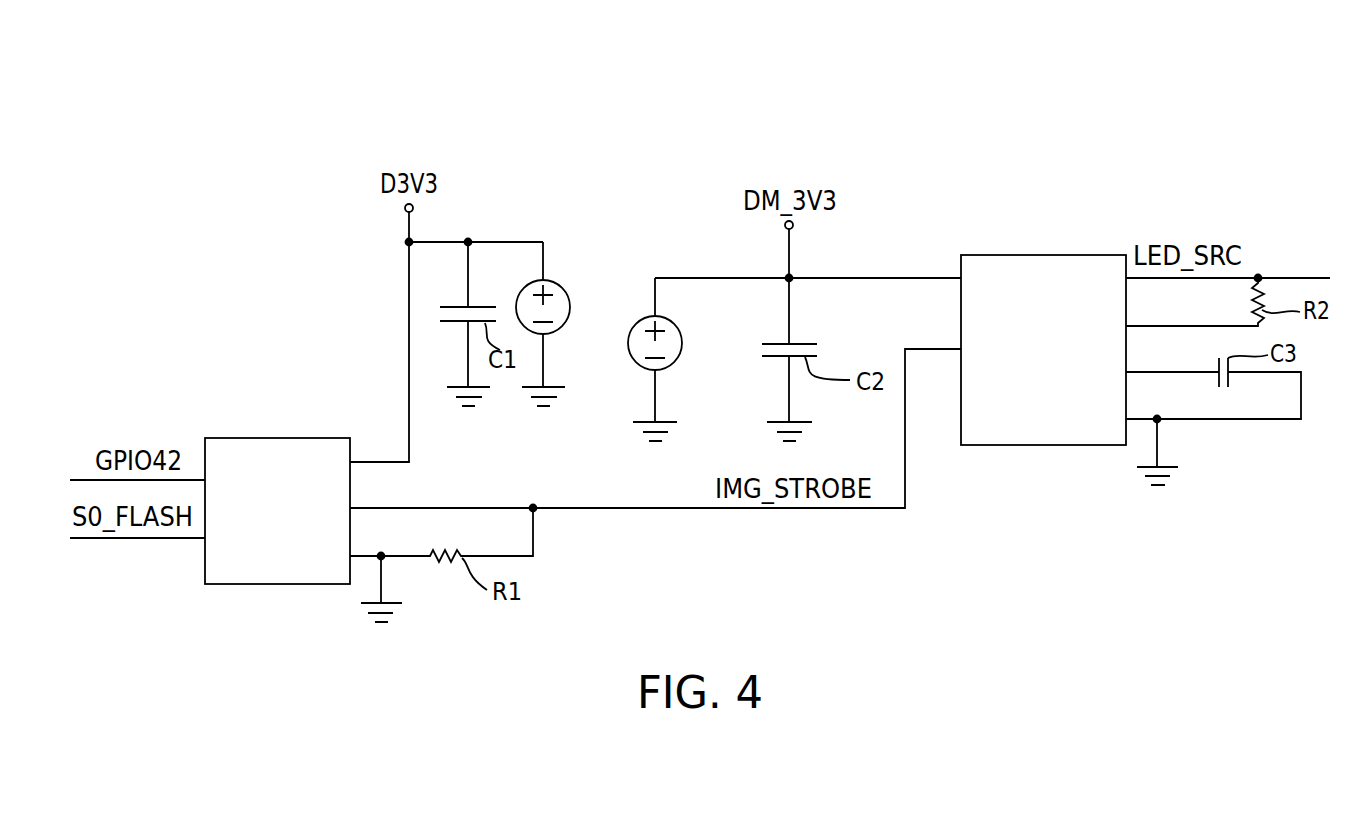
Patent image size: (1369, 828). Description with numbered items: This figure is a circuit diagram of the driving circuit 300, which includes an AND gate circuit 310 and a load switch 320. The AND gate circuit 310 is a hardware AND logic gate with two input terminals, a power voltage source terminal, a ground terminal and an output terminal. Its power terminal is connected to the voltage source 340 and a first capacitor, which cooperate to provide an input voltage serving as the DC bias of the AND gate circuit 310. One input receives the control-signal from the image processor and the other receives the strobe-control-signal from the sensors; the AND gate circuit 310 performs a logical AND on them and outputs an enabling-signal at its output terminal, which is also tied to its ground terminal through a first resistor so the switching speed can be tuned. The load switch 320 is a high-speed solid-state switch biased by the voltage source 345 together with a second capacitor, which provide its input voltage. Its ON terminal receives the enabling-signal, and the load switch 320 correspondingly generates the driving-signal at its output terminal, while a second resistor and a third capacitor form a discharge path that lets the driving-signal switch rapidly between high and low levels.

The driving circuit 300 is at (908, 73).
The AND gate circuit 310 is at (280, 437).
The load switch 320 is at (1045, 255).
The voltage source 340 is at (570, 307).
The voltage source 345 is at (683, 343).